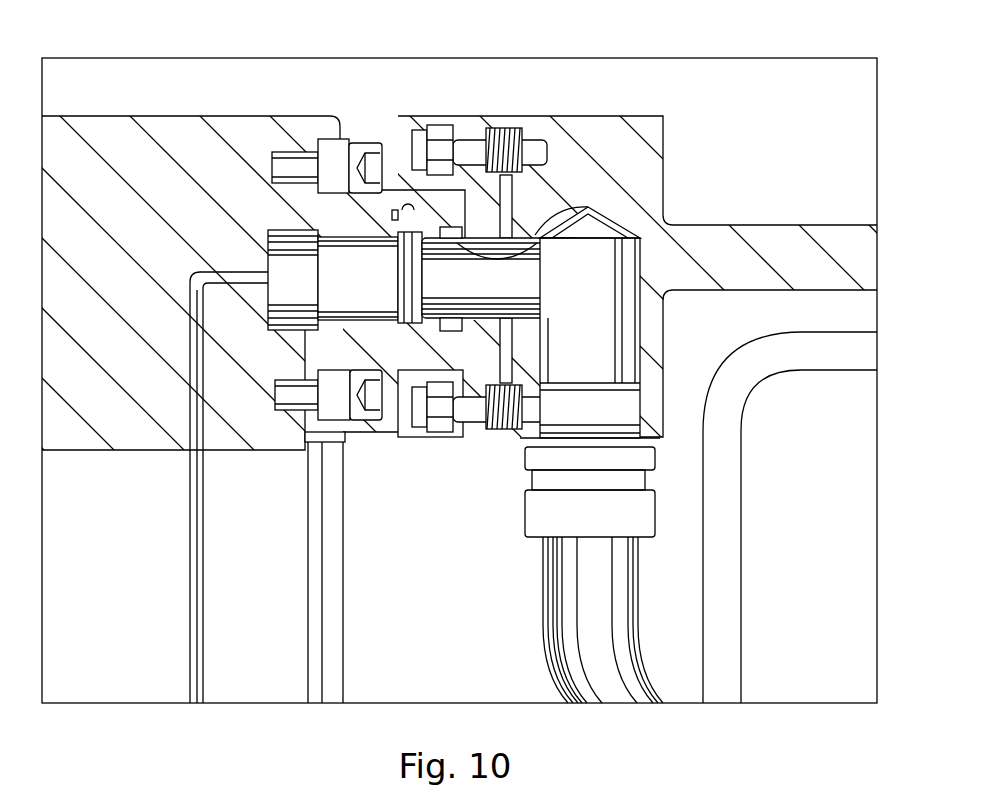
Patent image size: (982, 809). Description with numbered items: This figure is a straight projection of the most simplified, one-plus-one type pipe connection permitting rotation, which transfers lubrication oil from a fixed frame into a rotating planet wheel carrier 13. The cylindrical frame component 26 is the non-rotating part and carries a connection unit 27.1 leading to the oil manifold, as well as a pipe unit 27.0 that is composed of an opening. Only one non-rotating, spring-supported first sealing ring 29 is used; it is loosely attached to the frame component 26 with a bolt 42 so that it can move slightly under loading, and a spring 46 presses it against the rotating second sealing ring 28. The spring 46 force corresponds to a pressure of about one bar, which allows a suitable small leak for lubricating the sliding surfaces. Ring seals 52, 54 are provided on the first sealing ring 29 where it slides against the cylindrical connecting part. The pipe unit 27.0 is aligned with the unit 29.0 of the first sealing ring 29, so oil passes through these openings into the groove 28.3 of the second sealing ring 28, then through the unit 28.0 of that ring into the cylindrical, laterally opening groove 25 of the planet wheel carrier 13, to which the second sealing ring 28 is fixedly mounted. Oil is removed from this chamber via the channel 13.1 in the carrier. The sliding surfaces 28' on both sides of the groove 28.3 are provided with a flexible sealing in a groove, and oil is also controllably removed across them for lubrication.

The planet wheel carrier 13 is at (62, 324).
The channel 13.1 is at (190, 427).
The cylindrical groove 25 is at (262, 258).
The frame component 26 is at (772, 274).
The pipe unit 27.0 is at (482, 296).
The connection unit 27.1 is at (563, 351).
The second sealing ring 28 is at (325, 216).
The sliding surface 28' is at (378, 116).
The unit of the second sealing ring 28.0 is at (330, 296).
The groove 28.3 is at (350, 305).
The first sealing ring 29 is at (450, 207).
The unit of the first sealing ring 29.0 is at (400, 322).
The bolt 42 is at (475, 150).
The spring 46 is at (505, 128).
The ring seal 52 is at (600, 205).
The ring seal 54 is at (440, 323).